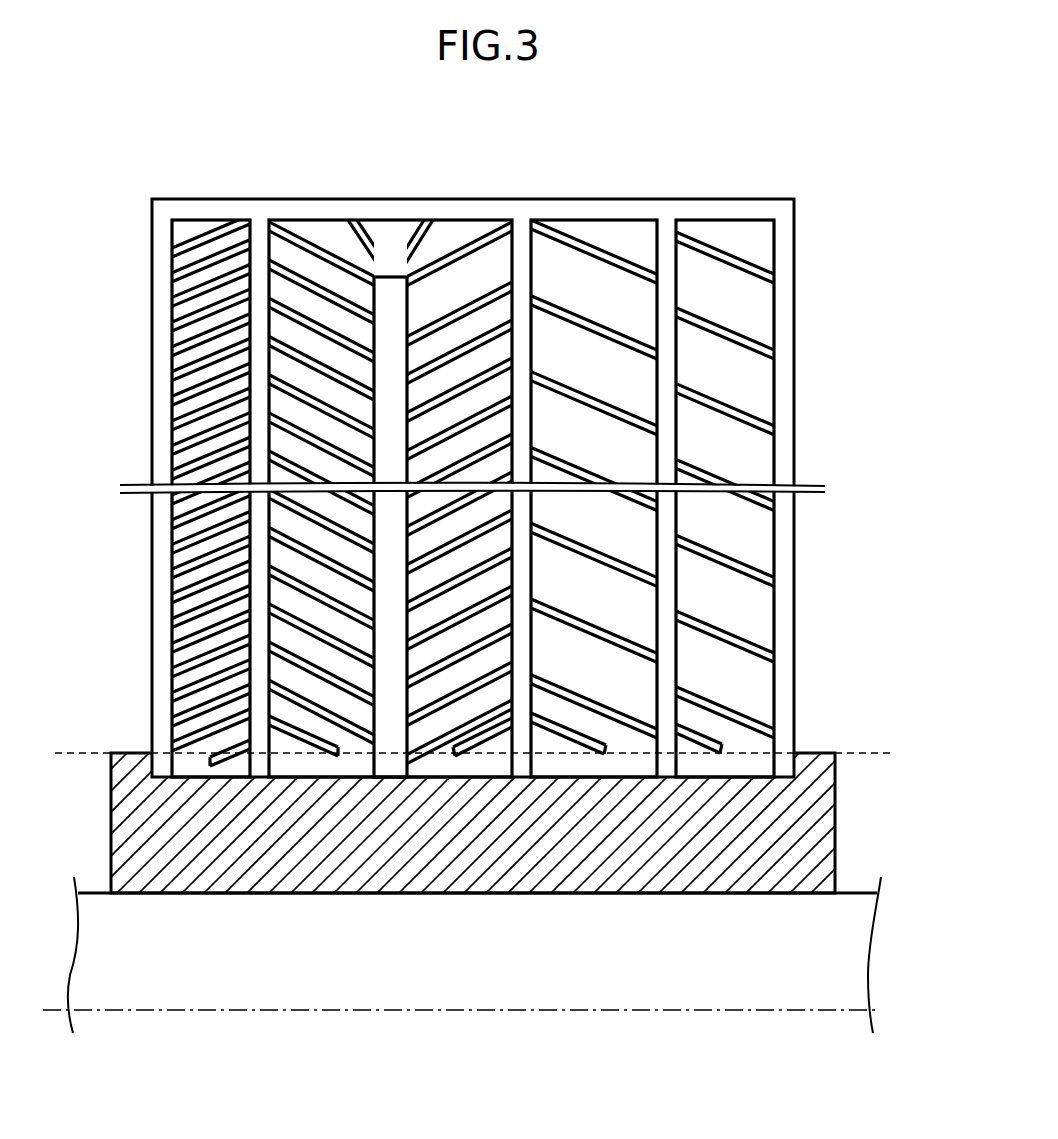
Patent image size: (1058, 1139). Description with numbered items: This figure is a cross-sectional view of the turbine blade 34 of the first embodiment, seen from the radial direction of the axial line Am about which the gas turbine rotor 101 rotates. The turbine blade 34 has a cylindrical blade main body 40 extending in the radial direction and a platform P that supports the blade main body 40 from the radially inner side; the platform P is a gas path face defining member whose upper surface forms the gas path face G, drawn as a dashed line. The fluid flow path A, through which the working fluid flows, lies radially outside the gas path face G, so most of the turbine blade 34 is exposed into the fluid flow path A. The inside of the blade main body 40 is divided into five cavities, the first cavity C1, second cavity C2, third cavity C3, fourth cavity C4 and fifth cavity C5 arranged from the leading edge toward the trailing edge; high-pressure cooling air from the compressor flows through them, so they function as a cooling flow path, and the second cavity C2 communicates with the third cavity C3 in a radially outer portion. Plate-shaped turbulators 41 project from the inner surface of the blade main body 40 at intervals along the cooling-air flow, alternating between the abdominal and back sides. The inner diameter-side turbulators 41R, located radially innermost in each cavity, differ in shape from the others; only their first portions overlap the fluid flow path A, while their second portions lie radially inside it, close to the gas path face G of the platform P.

The turbine blade 34 is at (484, 454).
The blade main body 40 is at (258, 197).
The turbulators 41 is at (430, 455).
The inner diameter-side turbulators 41R is at (318, 737).
The first cavity C1 is at (204, 238).
The second cavity C2 is at (330, 238).
The third cavity C3 is at (441, 238).
The fourth cavity C4 is at (588, 238).
The fifth cavity C5 is at (705, 238).
The fluid flow path A is at (812, 653).
The gas path face G is at (818, 754).
The platform P is at (836, 834).
The axial line Am is at (645, 1013).
The gas turbine rotor 101 is at (760, 945).